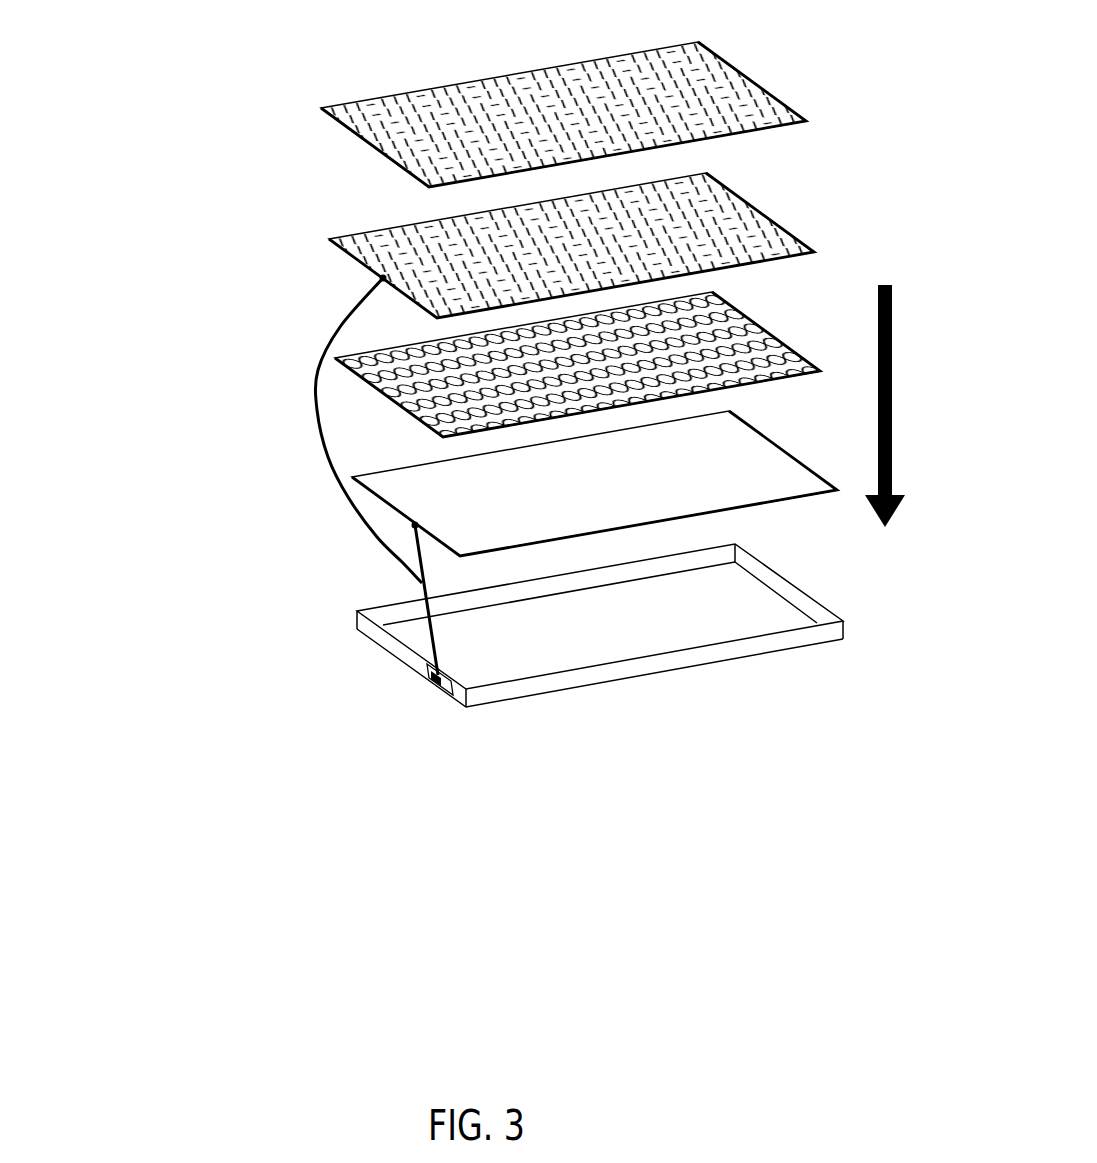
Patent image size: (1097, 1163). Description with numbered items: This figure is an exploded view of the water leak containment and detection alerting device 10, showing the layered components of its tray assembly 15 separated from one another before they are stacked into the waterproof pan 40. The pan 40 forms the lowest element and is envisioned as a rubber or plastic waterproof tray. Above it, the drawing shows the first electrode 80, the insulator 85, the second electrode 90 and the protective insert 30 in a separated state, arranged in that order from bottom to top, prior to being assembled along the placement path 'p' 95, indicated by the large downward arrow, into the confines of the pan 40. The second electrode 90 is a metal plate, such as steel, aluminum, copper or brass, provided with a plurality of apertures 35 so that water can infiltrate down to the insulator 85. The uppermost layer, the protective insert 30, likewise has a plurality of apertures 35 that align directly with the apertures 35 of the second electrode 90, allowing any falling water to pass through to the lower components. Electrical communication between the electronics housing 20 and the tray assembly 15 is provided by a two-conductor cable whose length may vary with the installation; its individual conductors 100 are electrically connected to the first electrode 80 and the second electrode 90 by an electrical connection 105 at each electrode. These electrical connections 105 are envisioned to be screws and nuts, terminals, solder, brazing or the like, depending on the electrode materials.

The water leak containment and detection alerting device 10 is at (148, 752).
The tray assembly 15 is at (893, 104).
The electronics housing 20 is at (443, 697).
The protective insert 30 is at (375, 148).
The apertures 35 is at (682, 78).
The waterproof pan 40 is at (427, 668).
The first electrode 80 is at (408, 516).
The insulator 85 is at (368, 385).
The second electrode 90 is at (362, 262).
The placement path 'p' 95 is at (887, 340).
The conductors 100 is at (316, 372).
The electrical connection 105 is at (381, 280).